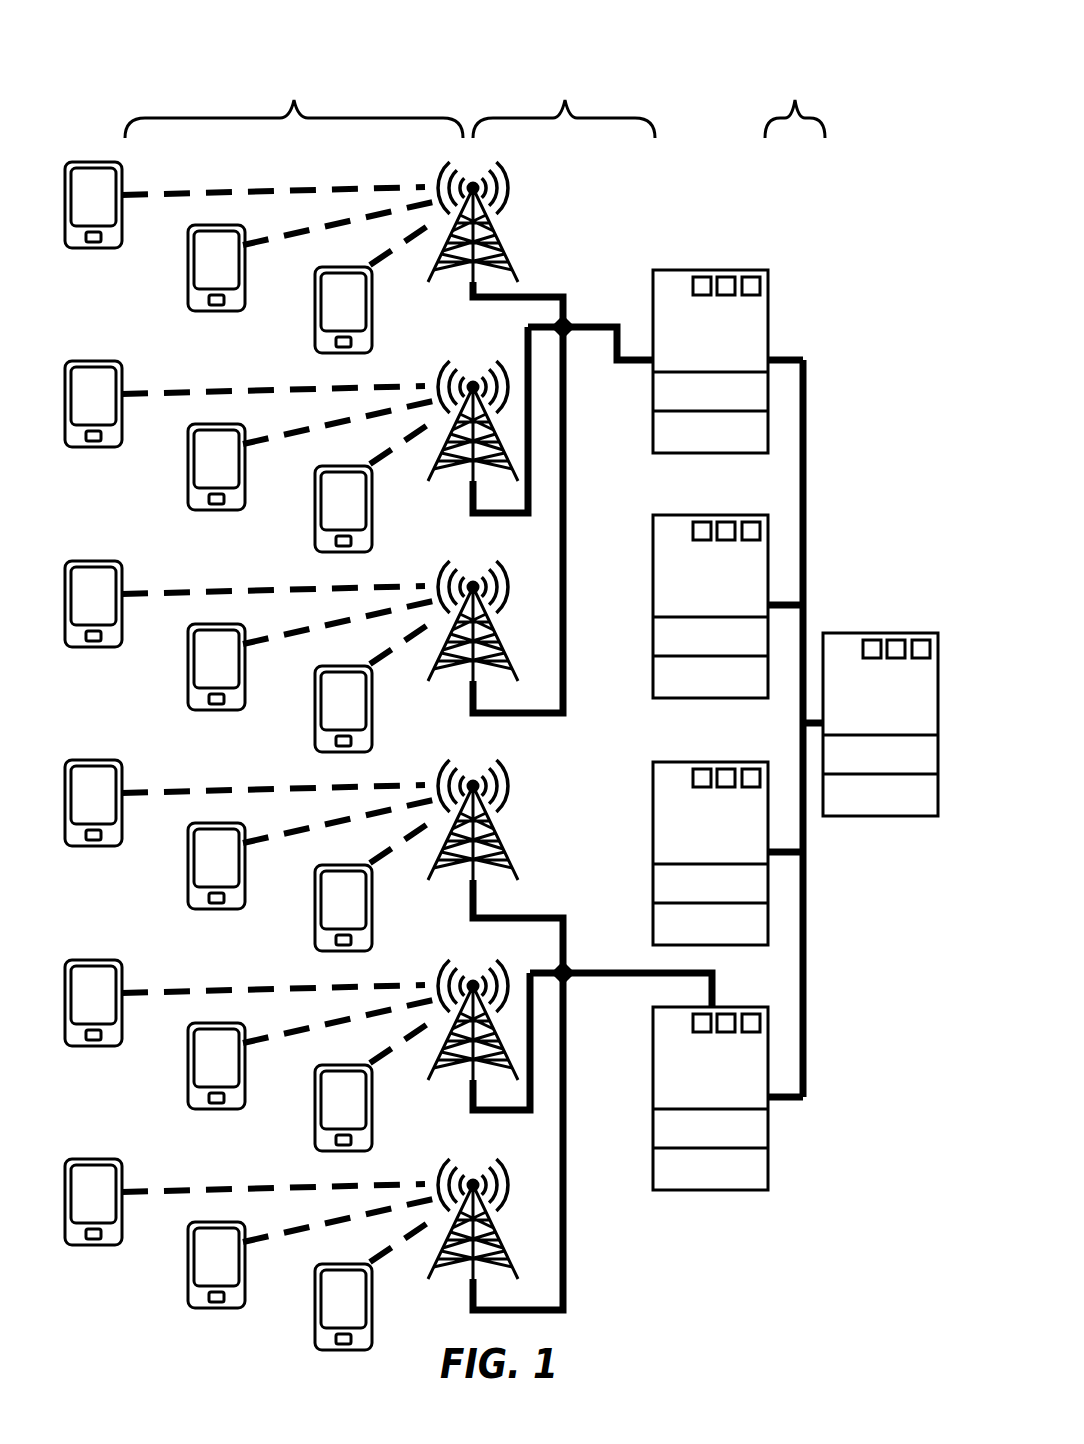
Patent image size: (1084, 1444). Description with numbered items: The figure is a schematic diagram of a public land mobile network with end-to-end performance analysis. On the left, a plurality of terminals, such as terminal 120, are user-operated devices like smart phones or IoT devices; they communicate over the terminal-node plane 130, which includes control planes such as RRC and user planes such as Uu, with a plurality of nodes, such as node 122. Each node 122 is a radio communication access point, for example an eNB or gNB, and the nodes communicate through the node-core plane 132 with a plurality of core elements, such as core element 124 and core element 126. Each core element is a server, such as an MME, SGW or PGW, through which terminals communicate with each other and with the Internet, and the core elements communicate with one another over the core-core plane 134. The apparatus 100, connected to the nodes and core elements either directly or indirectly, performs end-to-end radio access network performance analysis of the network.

The apparatus 100 is at (845, 633).
The terminal 120 is at (188, 262).
The node 122 is at (502, 248).
The core element 124 is at (700, 270).
The core network node 126 is at (653, 873).
The terminal-node plane 130 is at (294, 69).
The node-core plane 132 is at (561, 69).
The core-core plane 134 is at (788, 69).